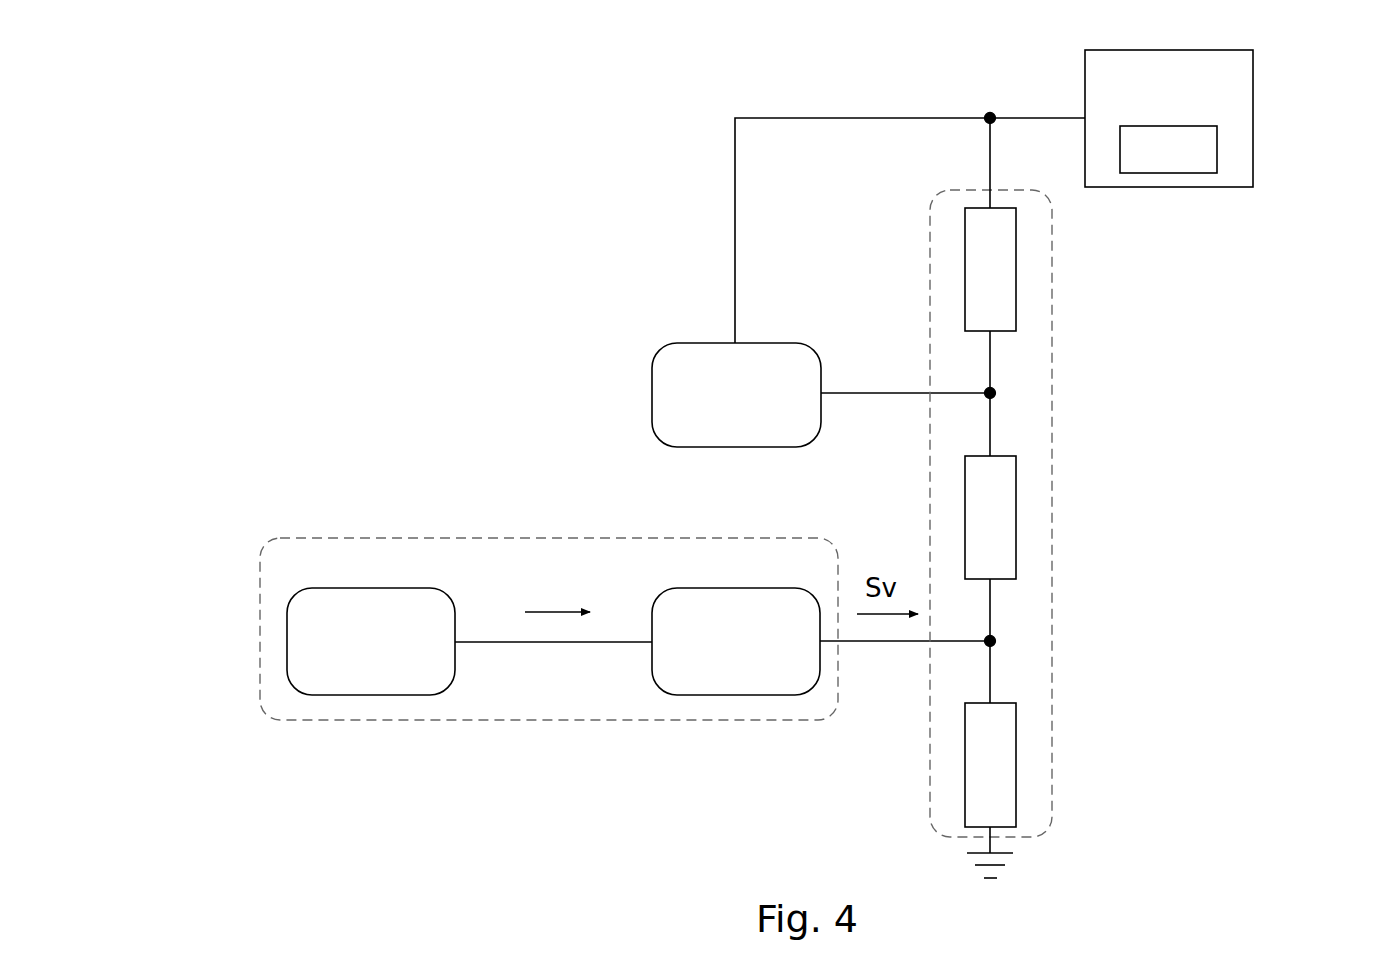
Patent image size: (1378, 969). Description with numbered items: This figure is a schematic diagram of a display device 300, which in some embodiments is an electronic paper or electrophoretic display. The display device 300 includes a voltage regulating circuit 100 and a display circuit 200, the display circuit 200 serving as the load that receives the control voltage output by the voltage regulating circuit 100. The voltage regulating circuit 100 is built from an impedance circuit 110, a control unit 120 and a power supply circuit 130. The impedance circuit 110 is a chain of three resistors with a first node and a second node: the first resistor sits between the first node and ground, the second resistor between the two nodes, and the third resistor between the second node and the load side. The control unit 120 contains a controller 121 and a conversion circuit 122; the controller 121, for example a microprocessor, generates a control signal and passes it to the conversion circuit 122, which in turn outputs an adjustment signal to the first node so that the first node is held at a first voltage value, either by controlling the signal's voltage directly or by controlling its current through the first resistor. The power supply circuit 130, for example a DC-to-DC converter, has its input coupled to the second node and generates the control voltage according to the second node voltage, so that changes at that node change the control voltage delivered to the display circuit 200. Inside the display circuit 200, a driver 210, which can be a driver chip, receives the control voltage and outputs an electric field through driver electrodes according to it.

The display device 300 is at (172, 43).
The voltage regulating circuit 100 is at (440, 407).
The impedance circuit 110 is at (1052, 517).
The control unit 120 is at (550, 720).
The controller 121 is at (372, 695).
The conversion circuit 122 is at (735, 695).
The power supply circuit 130 is at (652, 390).
The display circuit 200 is at (1253, 93).
The driver 210 is at (1217, 147).